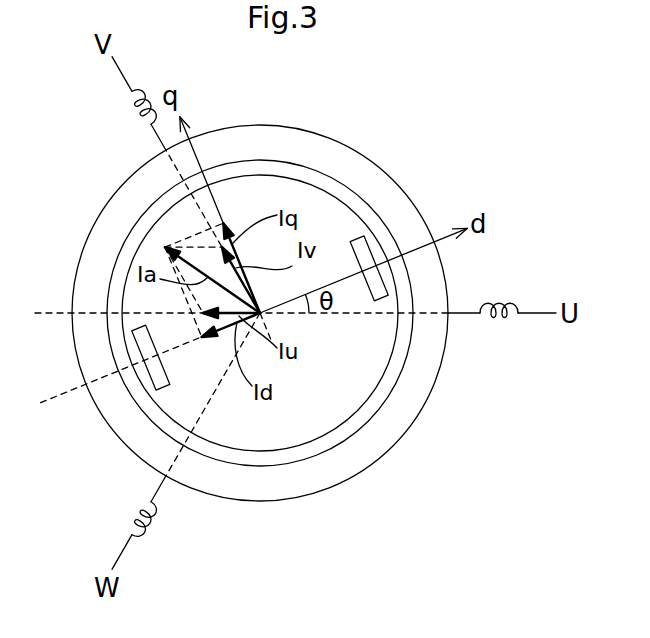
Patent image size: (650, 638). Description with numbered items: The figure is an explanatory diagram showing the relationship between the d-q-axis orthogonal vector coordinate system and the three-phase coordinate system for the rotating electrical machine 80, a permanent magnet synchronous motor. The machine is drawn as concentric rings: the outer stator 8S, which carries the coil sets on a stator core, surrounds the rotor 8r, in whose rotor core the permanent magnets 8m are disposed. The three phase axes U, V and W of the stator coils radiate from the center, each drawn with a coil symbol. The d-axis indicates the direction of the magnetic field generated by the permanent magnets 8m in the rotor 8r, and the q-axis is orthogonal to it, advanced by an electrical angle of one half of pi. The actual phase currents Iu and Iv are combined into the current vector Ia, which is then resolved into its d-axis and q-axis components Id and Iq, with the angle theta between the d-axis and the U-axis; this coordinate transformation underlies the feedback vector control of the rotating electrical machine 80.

The rotating electrical machine 80 is at (465, 73).
The stator 8S is at (327, 135).
The rotor 8r is at (332, 435).
The permanent magnets 8m is at (360, 244).